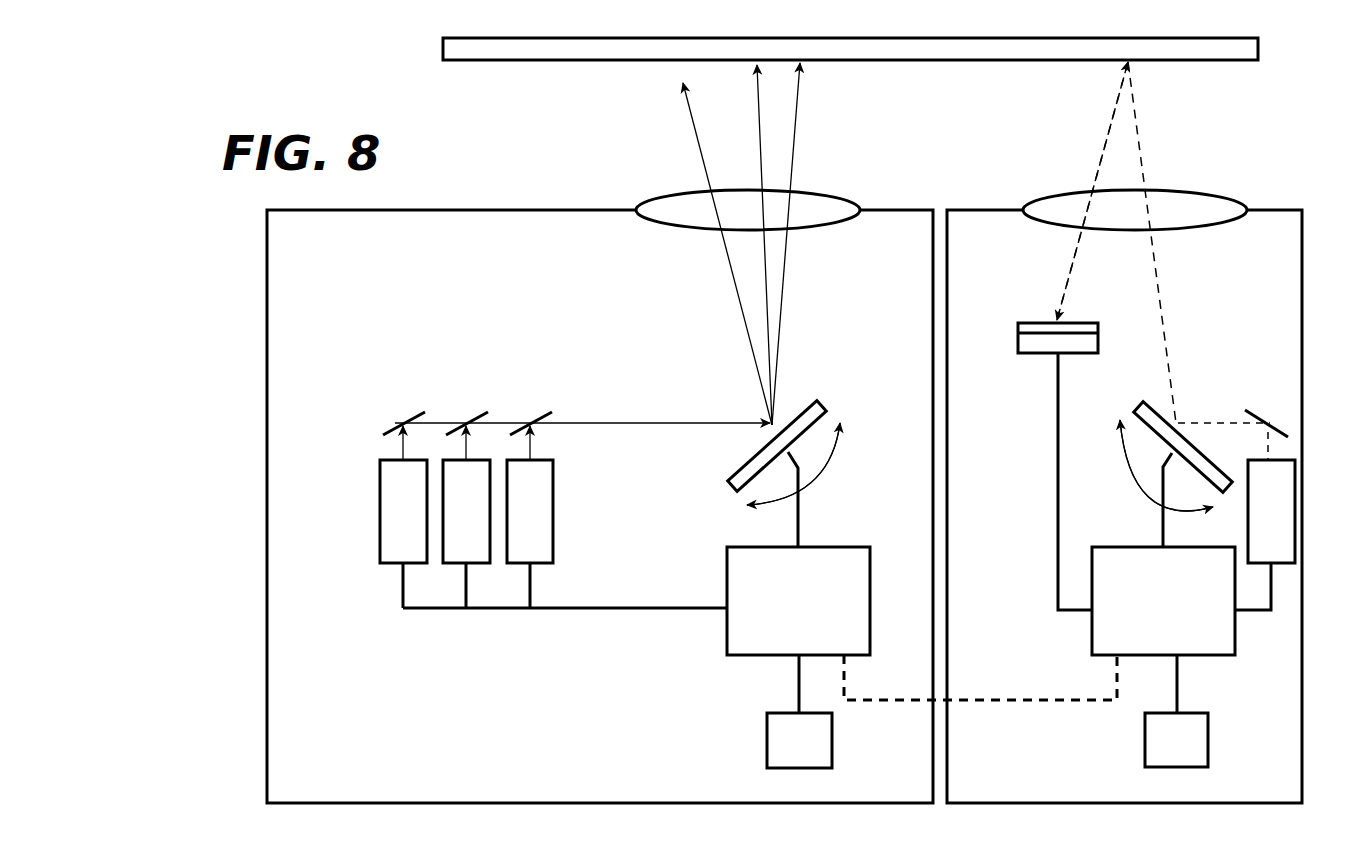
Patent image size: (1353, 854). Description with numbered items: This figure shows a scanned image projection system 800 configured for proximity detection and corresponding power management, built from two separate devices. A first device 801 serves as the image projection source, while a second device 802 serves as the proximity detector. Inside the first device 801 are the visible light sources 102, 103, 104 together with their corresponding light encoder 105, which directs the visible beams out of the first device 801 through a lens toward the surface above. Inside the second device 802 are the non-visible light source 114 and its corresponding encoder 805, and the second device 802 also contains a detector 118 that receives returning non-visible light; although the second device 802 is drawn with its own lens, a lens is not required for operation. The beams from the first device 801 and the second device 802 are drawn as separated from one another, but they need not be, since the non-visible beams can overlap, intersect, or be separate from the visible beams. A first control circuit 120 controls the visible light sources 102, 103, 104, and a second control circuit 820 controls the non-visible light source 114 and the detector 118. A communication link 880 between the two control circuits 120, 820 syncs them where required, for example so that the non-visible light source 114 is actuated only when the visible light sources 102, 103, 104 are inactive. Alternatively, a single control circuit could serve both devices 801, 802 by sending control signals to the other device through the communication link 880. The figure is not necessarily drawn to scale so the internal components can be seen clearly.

The projection system 800 is at (236, 355).
The first device 801 is at (267, 258).
The second device 802 is at (947, 485).
The visible light source 102 is at (392, 563).
The visible light source 103 is at (455, 563).
The visible light source 104 is at (518, 563).
The light encoder 105 is at (730, 477).
The first control circuit 120 is at (727, 645).
The communication link 880 is at (967, 700).
The detector 118 is at (1037, 323).
The encoder 805 is at (1143, 405).
The non-visible light source 114 is at (1248, 503).
The second control circuit 820 is at (1198, 655).